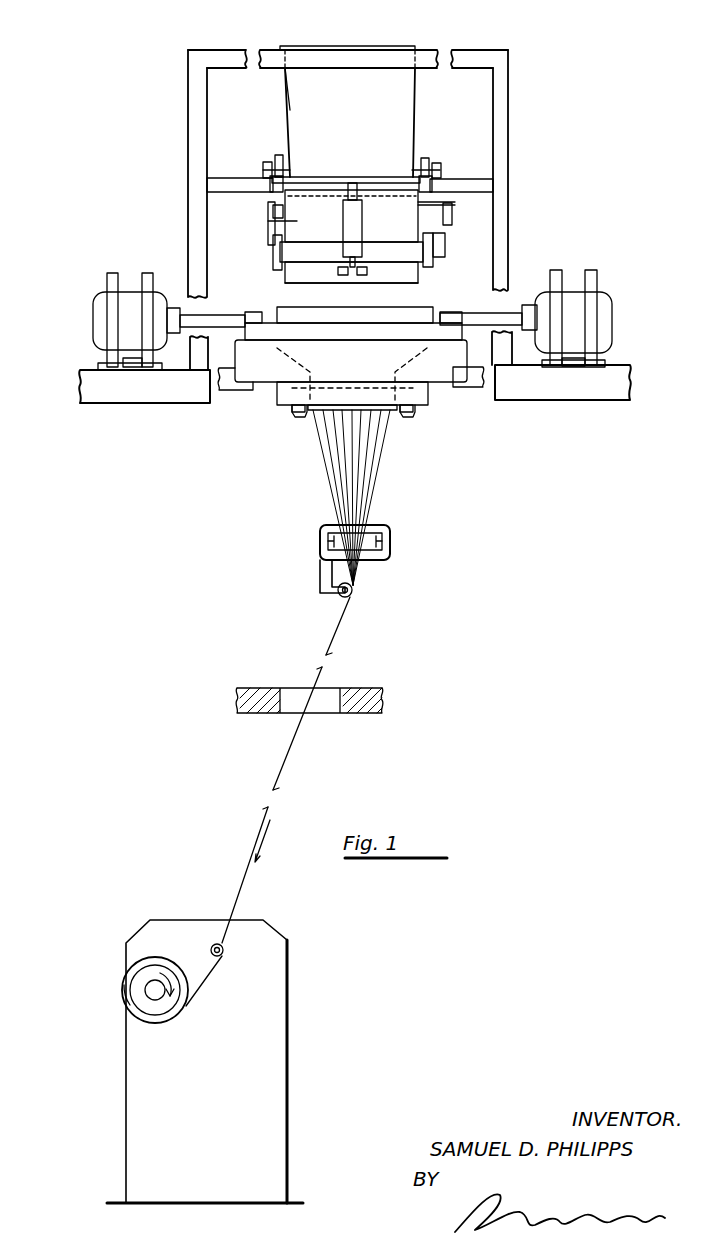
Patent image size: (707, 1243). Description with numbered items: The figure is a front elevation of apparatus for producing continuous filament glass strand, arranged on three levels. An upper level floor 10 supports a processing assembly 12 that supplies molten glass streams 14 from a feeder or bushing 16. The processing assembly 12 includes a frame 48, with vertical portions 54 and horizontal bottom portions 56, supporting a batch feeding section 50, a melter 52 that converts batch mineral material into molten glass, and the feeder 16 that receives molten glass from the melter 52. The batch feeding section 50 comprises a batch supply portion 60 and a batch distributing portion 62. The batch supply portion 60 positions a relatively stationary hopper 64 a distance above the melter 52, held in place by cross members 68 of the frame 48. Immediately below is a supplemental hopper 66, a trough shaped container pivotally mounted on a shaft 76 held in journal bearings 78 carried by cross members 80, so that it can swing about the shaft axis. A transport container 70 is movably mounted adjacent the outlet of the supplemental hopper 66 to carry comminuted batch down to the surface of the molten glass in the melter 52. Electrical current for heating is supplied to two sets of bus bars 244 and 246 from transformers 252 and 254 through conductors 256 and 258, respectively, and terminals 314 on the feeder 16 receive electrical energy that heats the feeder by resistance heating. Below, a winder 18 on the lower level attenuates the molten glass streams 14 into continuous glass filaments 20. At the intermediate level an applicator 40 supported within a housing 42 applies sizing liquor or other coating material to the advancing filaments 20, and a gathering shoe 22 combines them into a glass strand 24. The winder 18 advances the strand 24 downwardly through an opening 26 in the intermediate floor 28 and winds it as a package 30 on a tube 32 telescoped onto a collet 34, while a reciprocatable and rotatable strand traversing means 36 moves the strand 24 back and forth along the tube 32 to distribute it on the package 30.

The upper level floor 10 is at (95, 372).
The processing assembly 12 is at (522, 134).
The molten glass streams 14 is at (305, 410).
The feeder or bushing 16 is at (335, 418).
The winder 18 is at (292, 937).
The continuous glass filaments 20 is at (350, 490).
The gathering shoe 22 is at (340, 598).
The glass strand 24 is at (357, 613).
The opening 26 is at (300, 692).
The intermediate floor 28 is at (265, 690).
The package 30 is at (124, 980).
The tube 32 is at (135, 996).
The collet 34 is at (150, 1002).
The strand traversing means 36 is at (225, 945).
The applicator 40 is at (365, 530).
The housing 42 is at (390, 528).
The frame 48 is at (193, 52).
The batch feeding section 50 is at (425, 129).
The melter 52 is at (275, 350).
The vertical portions 54 is at (190, 106).
The horizontal bottom portions 56 is at (225, 390).
The batch supply portion 60 is at (420, 90).
The batch distributing portion 62 is at (465, 209).
The stationary hopper 64 is at (285, 75).
The supplemental hopper 66 is at (297, 222).
The cross members 68 is at (330, 55).
The transport container 70 is at (418, 279).
The shaft 76 is at (264, 168).
The journal bearings 78 is at (282, 158).
The cross members 80 is at (220, 178).
The bus bars 244 is at (312, 337).
The bus bars 246 is at (360, 340).
The transformer 252 is at (130, 282).
The transformer 254 is at (572, 280).
The conductor 256 is at (200, 318).
The conductor 258 is at (478, 322).
The terminals 314 is at (296, 408).